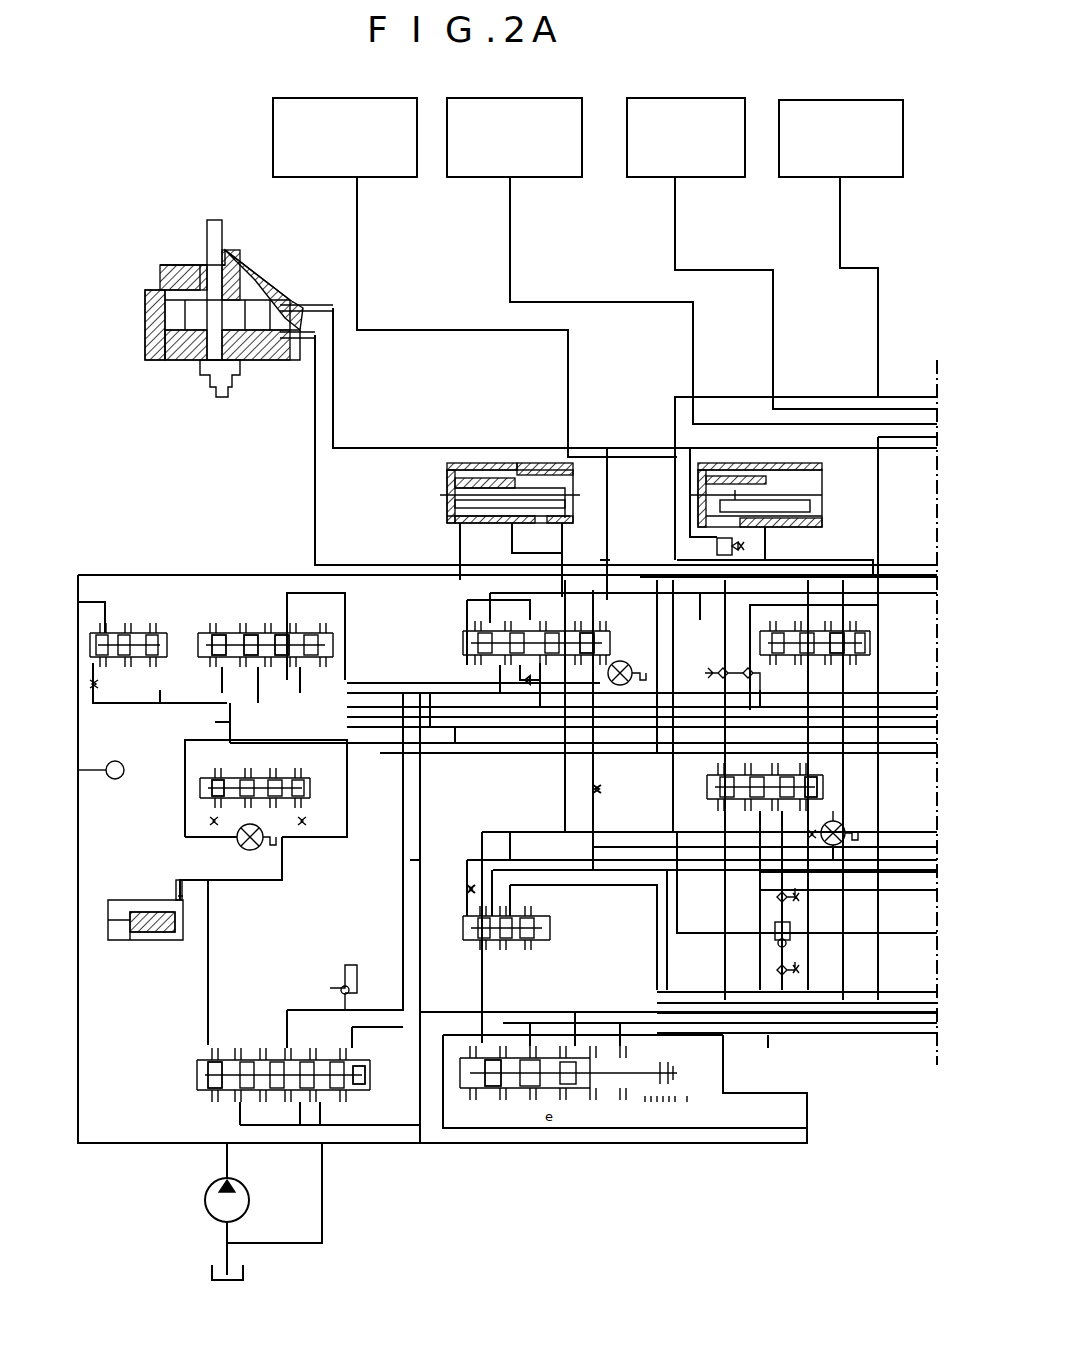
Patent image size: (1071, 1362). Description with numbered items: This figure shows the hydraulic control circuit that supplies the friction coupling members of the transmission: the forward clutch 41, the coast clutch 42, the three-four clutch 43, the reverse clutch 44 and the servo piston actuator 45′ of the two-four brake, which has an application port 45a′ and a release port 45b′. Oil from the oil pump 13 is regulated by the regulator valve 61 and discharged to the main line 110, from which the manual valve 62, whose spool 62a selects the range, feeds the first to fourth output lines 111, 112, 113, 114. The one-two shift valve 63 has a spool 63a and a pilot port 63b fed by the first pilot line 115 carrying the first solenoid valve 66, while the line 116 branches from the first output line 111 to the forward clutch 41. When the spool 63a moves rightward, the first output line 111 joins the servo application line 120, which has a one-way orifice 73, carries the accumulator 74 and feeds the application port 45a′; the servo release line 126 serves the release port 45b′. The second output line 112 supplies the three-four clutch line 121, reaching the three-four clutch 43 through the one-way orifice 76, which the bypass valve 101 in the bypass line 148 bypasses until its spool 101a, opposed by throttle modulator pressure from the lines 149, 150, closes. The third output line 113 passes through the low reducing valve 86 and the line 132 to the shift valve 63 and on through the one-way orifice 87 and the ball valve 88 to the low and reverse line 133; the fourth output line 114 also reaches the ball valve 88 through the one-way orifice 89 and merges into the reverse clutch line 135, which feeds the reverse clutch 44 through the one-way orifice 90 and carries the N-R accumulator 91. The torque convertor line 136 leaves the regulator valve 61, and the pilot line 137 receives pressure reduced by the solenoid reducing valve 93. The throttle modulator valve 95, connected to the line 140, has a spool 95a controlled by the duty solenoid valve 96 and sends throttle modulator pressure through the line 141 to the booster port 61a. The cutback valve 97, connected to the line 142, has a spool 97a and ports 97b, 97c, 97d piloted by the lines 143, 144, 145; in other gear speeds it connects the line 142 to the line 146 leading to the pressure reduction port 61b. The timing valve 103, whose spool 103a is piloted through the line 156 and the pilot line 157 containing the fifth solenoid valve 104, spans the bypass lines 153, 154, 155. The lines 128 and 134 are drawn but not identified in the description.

The oil pump 13 is at (205, 1200).
The forward clutch 41 is at (553, 98).
The coast clutch 42 is at (700, 98).
The 3-4 clutch 43 is at (848, 100).
The reverse clutch 44 is at (410, 98).
The actuator (servo piston) 45′ is at (282, 265).
The application port 45a′ is at (297, 345).
The release port 45b′ is at (290, 305).
The regulator valve 61 is at (254, 1040).
The booster port 61a is at (200, 1050).
The pressure reduction port 61b is at (362, 1051).
The manual valve 62 is at (684, 1081).
The spool 62a is at (497, 1096).
The 1-2 shift valve 63 is at (833, 783).
The spool 63a is at (822, 790).
The pilot port 63b is at (822, 811).
The first solenoid valve 66 is at (812, 862).
The one-way orifice 73 is at (720, 668).
The accumulator 74 is at (447, 482).
The one-way orifice 76 is at (746, 668).
The low reducing valve 86 is at (560, 933).
The one-way orifice 87 is at (805, 914).
The ball valve 88 is at (793, 934).
The one-way orifice 89 is at (795, 964).
The one-way orifice 90 is at (717, 549).
The N-R accumulator 91 is at (822, 494).
The solenoid reducing valve 93 is at (152, 622).
The throttle modulator valve 95 is at (318, 793).
The spool 95a is at (232, 778).
The duty solenoid valve 96 is at (238, 848).
The cutback valve 97 is at (233, 618).
The spool 97a is at (255, 633).
The first port 97b is at (258, 660).
The second port 97c is at (332, 633).
The third port 97d is at (218, 660).
The bypass valve 101 is at (791, 658).
The spool 101a is at (838, 665).
The timing valve 103 is at (618, 628).
The spool 103a is at (595, 626).
The fifth solenoid valve 104 is at (623, 661).
The main line 110 is at (460, 1145).
The first output line 111 is at (577, 1012).
The second output line 112 is at (630, 1147).
The third output line 113 is at (525, 1012).
The fourth output line 114 is at (613, 1030).
The first pilot line 115 is at (808, 887).
The forward clutch line 116 is at (693, 378).
The servo application line 120 is at (315, 503).
The 3-4 clutch line 121 is at (878, 378).
The servo release line 126 is at (340, 416).
The coast clutch passage 128 is at (773, 378).
The line 132 is at (533, 862).
The low and reverse line 133 is at (677, 900).
The oil passage 134 is at (766, 1042).
The reverse clutch line 135 is at (568, 378).
The torque convertor line 136 is at (433, 1007).
The pilot line 137 is at (160, 705).
The line 140 is at (220, 722).
The line 141 is at (247, 882).
The line 142 is at (347, 795).
The line 143 is at (533, 834).
The line 144 is at (365, 683).
The line 145 is at (445, 693).
The line 146 is at (403, 870).
The bypass line 148 is at (808, 702).
The line 149 is at (454, 745).
The line 150 is at (760, 702).
The first bypass line 153 is at (565, 707).
The second bypass line 154 is at (607, 505).
The third bypass line 155 is at (510, 762).
The line 156 is at (692, 992).
The pilot line 157 is at (596, 793).